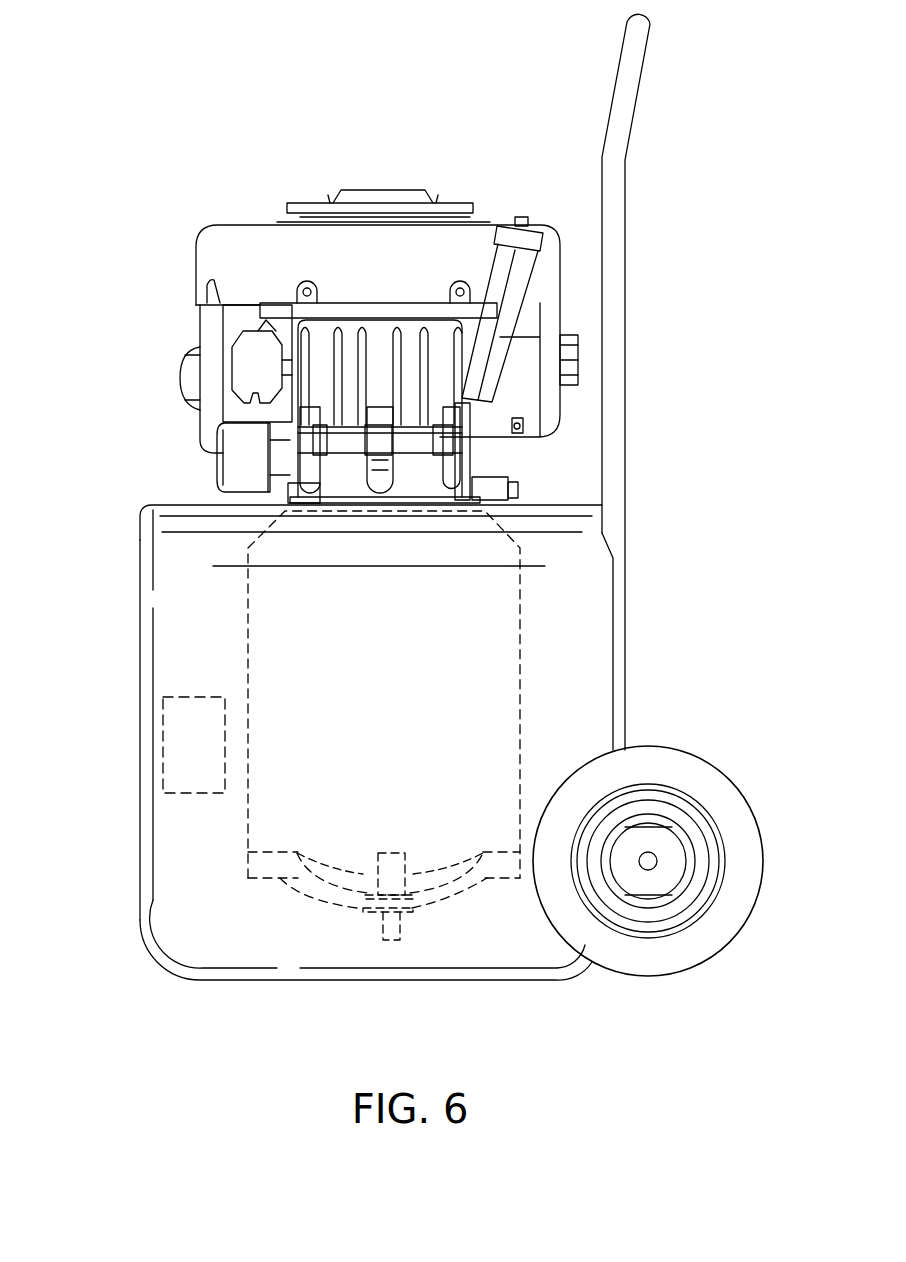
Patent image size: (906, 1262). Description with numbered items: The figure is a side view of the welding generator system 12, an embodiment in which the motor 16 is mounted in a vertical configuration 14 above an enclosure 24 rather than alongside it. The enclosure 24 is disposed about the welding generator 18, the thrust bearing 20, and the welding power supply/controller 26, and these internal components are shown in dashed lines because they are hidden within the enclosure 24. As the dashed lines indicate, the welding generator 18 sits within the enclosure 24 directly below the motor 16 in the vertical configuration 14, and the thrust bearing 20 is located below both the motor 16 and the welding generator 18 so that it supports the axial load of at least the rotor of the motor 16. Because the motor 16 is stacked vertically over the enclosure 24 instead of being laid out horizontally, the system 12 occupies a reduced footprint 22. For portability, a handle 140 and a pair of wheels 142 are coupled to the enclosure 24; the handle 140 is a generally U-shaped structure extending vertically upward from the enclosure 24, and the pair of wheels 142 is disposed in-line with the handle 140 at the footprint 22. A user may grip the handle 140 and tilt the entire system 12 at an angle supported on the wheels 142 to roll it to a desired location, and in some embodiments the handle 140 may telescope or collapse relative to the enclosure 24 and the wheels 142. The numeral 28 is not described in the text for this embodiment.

The welding generator system 12 is at (228, 118).
The vertical configuration 14 is at (371, 171).
The motor 16 is at (200, 230).
The welding generator 18 is at (466, 891).
The thrust bearing 20 is at (368, 898).
The reduced footprint 22 is at (245, 981).
The enclosure 24 is at (140, 787).
The welding power supply/controller 26 is at (160, 722).
The tank 28 is at (141, 620).
The handle 140 is at (645, 50).
The pair of wheels 142 is at (695, 757).